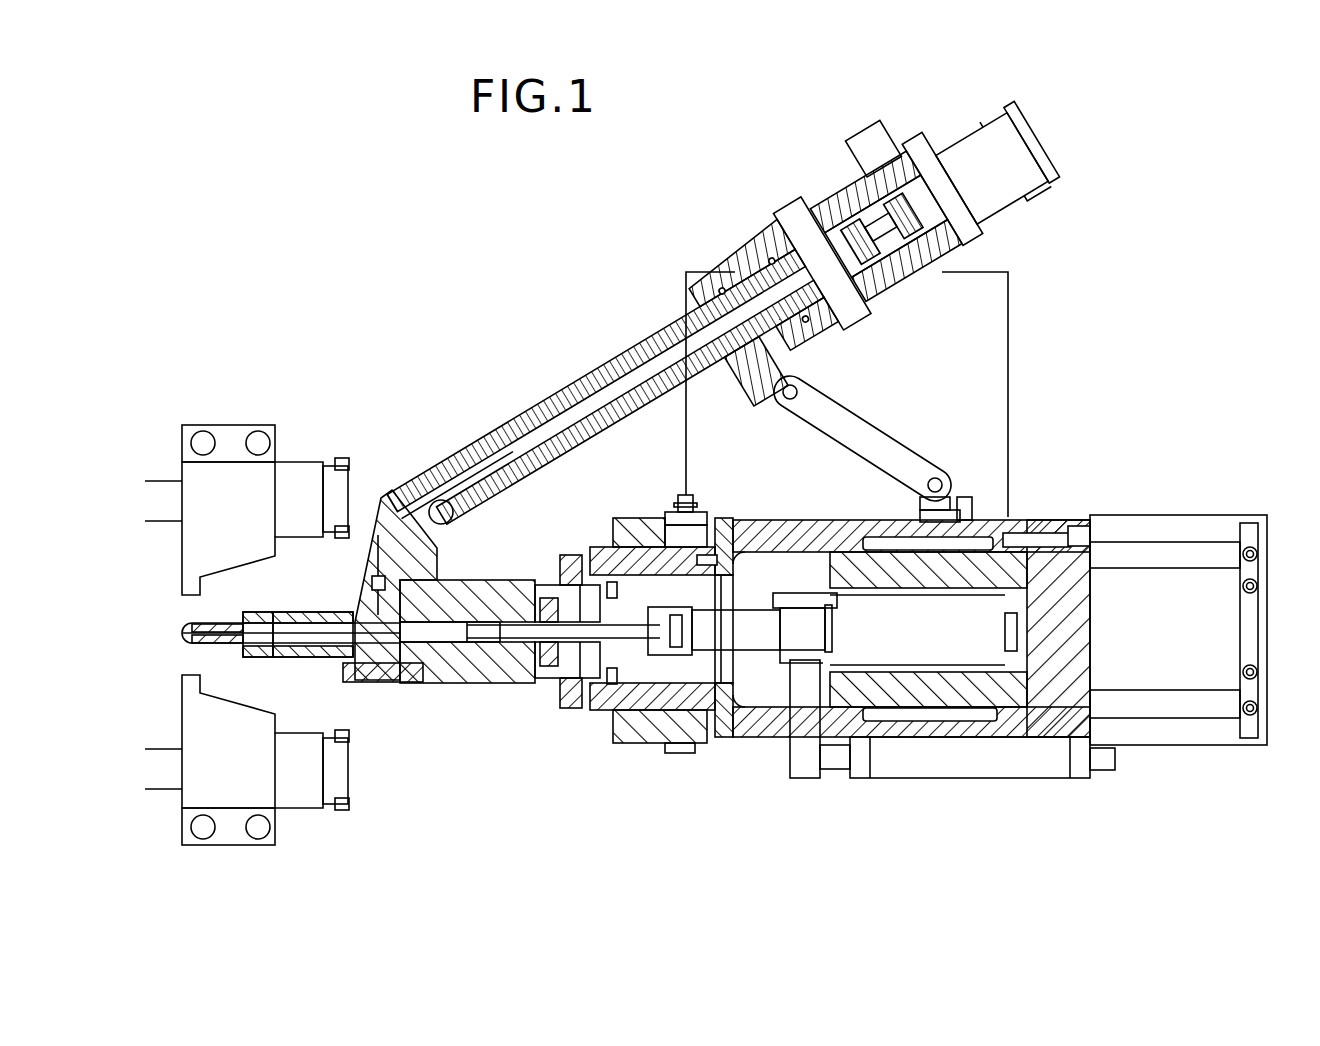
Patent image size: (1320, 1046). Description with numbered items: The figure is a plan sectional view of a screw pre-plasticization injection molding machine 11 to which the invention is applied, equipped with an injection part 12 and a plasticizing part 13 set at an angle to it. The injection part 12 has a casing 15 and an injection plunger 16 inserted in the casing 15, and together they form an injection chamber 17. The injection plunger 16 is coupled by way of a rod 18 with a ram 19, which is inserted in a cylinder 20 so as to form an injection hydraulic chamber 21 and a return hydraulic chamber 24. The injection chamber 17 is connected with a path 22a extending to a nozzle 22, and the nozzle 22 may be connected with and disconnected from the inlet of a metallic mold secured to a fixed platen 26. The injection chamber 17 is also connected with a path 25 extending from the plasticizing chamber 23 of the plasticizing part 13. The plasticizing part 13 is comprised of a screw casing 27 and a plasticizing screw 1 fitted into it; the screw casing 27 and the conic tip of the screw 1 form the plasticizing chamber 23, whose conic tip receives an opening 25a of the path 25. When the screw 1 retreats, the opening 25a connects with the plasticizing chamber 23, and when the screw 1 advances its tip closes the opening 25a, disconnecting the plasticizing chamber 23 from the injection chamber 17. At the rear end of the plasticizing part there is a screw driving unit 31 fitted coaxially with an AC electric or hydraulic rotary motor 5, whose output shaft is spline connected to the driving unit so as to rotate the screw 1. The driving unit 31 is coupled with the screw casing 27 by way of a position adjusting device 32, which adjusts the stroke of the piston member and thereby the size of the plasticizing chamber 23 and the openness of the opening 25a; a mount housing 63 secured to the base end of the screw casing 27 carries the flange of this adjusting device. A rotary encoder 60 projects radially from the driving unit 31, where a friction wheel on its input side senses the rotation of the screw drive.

The plasticizing screw 1 is at (487, 462).
The rotary motor 5 is at (978, 152).
The screw pre-plasticization injection molding machine 11 is at (500, 310).
The injection part 12 is at (565, 732).
The plasticizing part 13 is at (432, 440).
The casing 15 is at (470, 676).
The injection plunger 16 is at (565, 636).
The injection chamber 17 is at (440, 636).
The rod 18 is at (752, 640).
The ram 19 is at (935, 635).
The cylinder 20 is at (985, 690).
The injection hydraulic chamber 21 is at (1012, 632).
The nozzle 22 is at (178, 633).
The path 22a is at (300, 660).
The plasticizing chamber 23 is at (410, 500).
The return hydraulic chamber 24 is at (905, 680).
The path 25 is at (362, 592).
The opening 25a is at (455, 522).
The fixed platen 26 is at (190, 472).
The screw casing 27 is at (560, 395).
The screw driving unit 31 is at (915, 150).
The position adjusting device 32 is at (773, 205).
The rotary encoder 60 is at (863, 145).
The mount housing 63 is at (733, 270).